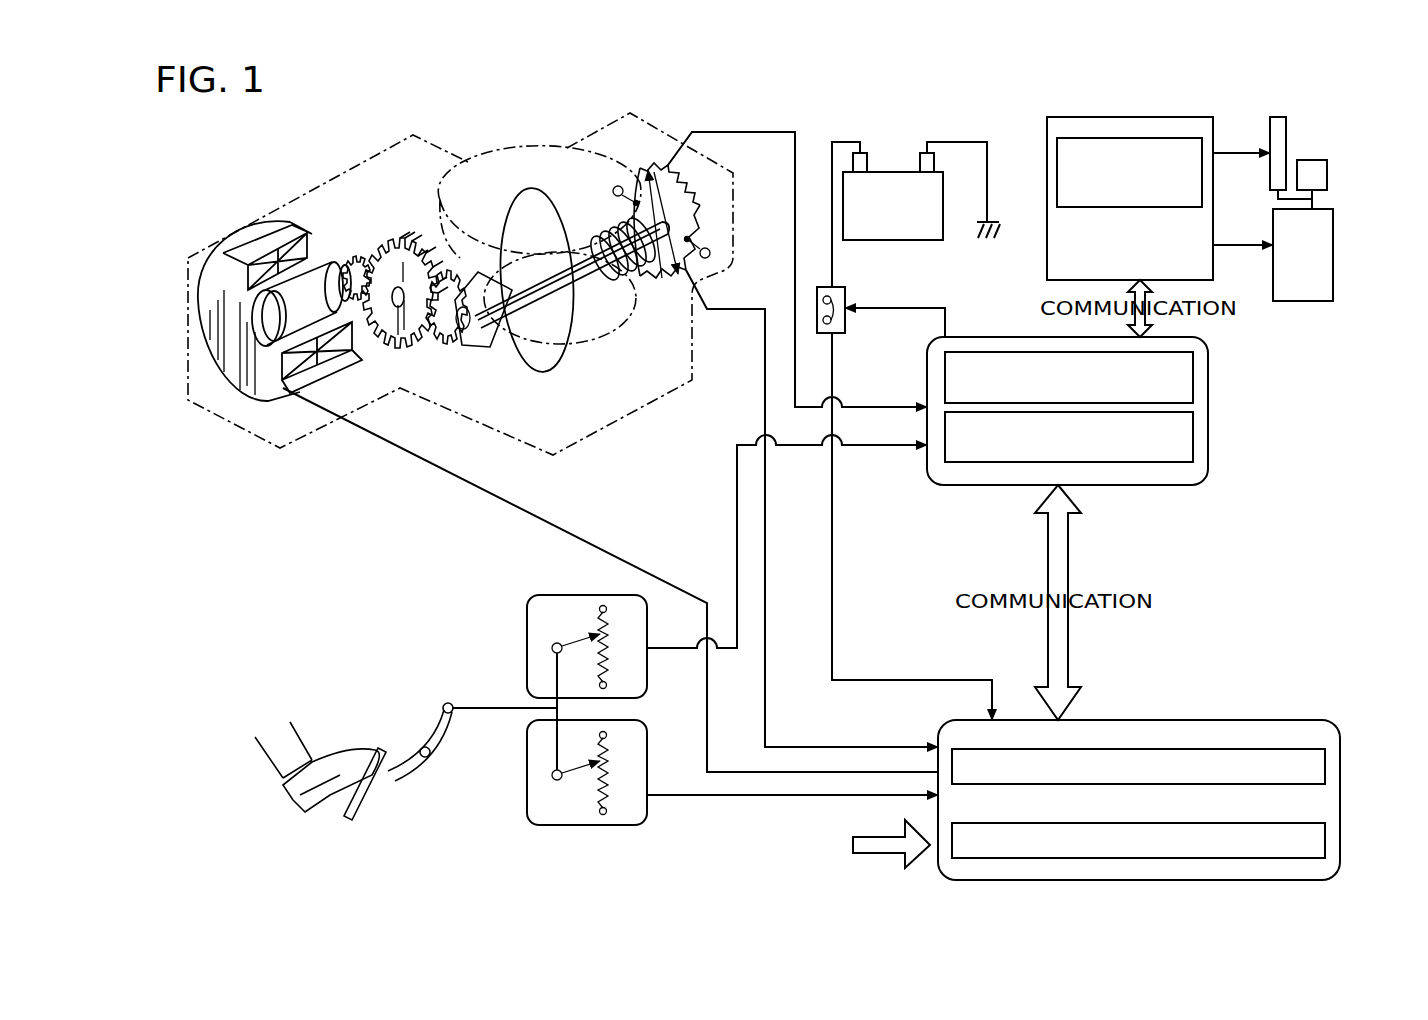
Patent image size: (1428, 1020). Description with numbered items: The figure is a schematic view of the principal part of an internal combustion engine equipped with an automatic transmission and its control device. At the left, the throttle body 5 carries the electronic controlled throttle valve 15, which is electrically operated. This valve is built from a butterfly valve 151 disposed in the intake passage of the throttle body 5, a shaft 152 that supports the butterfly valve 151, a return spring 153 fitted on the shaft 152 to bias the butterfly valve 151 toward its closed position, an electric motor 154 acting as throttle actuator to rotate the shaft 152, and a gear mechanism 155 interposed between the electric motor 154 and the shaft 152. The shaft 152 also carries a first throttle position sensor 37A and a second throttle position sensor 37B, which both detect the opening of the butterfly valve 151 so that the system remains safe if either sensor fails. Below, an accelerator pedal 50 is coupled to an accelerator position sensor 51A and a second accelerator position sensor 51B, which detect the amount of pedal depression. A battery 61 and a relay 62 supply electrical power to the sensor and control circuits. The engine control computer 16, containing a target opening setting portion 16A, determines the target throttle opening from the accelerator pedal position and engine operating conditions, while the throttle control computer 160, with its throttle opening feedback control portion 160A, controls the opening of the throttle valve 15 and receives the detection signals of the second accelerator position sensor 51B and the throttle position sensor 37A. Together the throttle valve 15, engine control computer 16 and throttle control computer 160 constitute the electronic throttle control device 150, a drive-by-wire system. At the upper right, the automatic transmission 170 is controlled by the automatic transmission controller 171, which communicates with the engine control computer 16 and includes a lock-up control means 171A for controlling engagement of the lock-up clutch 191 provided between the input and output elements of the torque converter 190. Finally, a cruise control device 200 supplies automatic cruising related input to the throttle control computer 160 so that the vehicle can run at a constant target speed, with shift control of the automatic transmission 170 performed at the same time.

The throttle body 5 is at (215, 412).
The electronic controlled throttle valve 15 is at (493, 148).
The butterfly valve 151 is at (540, 195).
The shaft 152 is at (497, 318).
The return spring 153 is at (655, 212).
The electric motor 154 is at (318, 272).
The gear mechanism 155 is at (427, 225).
The first throttle position sensor 37A is at (648, 292).
The second throttle position sensor 37B is at (650, 160).
The accelerator pedal 50 is at (352, 808).
The accelerator position sensor 51A is at (527, 608).
The second accelerator position sensor 51B is at (527, 798).
The battery 61 is at (888, 170).
The relay 62 is at (845, 290).
The engine control computer 16 is at (1067, 409).
The target opening setting portion 16A is at (956, 462).
The electronic throttle control device 150 is at (315, 623).
The throttle control computer 160 is at (1139, 767).
The throttle opening feedback control portion 160A is at (1213, 749).
The automatic transmission 170 is at (1333, 262).
The automatic transmission controller 171 is at (1160, 171).
The lock-up control means 171A is at (1133, 138).
The torque converter 190 is at (1314, 160).
The lock-up clutch 191 is at (1272, 117).
The cruise control device 200 is at (845, 860).